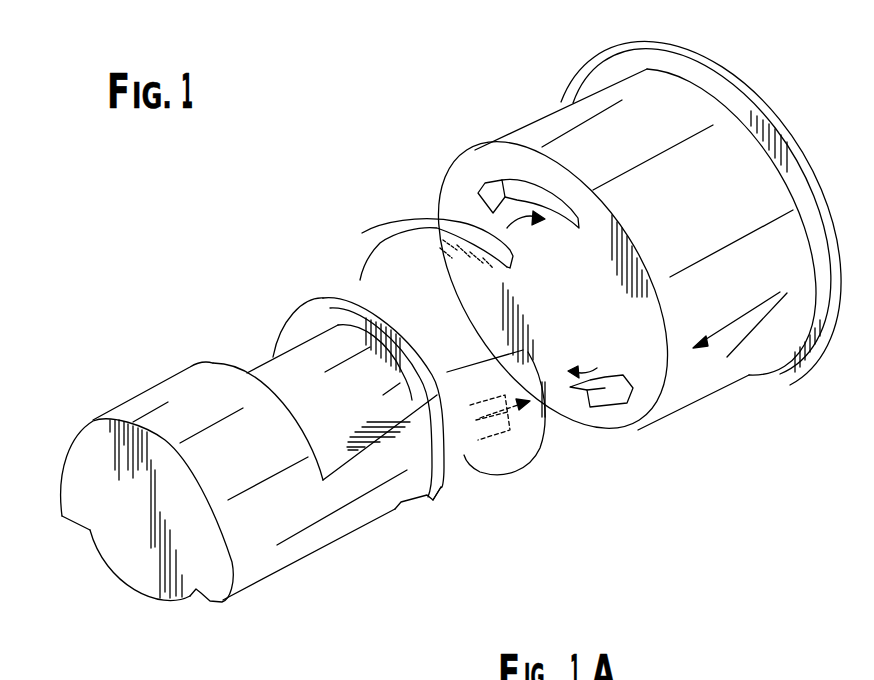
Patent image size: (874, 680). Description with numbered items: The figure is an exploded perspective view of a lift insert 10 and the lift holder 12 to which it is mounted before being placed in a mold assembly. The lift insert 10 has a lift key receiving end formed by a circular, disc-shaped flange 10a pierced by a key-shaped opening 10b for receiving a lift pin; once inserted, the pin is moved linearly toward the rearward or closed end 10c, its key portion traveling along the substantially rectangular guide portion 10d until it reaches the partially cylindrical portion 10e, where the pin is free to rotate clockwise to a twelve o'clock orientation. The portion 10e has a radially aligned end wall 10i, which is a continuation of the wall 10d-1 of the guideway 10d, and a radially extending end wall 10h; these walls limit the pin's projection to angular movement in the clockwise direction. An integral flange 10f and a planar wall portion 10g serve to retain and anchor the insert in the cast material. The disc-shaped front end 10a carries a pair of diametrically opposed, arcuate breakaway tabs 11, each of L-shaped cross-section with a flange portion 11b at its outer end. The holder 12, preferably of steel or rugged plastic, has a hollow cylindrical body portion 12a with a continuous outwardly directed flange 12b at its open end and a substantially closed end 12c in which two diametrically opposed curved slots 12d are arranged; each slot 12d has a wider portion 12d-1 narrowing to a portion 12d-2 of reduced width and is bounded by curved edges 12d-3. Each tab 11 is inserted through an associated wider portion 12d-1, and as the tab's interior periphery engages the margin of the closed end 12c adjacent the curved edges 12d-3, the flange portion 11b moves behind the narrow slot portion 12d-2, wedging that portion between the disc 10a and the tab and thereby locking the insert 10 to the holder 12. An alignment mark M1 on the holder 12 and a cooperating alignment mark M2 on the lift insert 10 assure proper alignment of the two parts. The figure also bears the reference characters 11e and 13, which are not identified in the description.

The lift insert 10 is at (538, 595).
The circular-shaped flange 10a is at (527, 440).
The key-shaped opening 10b is at (270, 377).
The rearward closed end 10c is at (118, 527).
The rectangular-shaped guide portion 10d is at (357, 507).
The wall of guideway 10d-1 is at (407, 508).
The partially cylindrical-shaped portion 10e is at (143, 410).
The integral flange 10f is at (343, 297).
The planar wall portion 10g is at (213, 360).
The radially extending end wall 10h is at (78, 523).
The radially aligned end wall 10i is at (253, 590).
The breakaway tabs 11 is at (475, 217).
The flange portion 11b is at (447, 220).
The ring serrations 11e is at (383, 233).
The lift holder 12 is at (740, 459).
The hollow cylindrical body portion 12a is at (566, 100).
The outwardly directed flange 12b is at (753, 84).
The closed end 12c is at (585, 320).
The curved slots 12d is at (563, 225).
The wider slot portion 12d-1 is at (500, 180).
The reduced-width slot portion 12d-2 is at (570, 185).
The curved edges 12d-3 is at (540, 170).
The keyway 13 is at (488, 450).
The alignment mark M1 is at (742, 310).
The alignment mark M2 is at (488, 398).